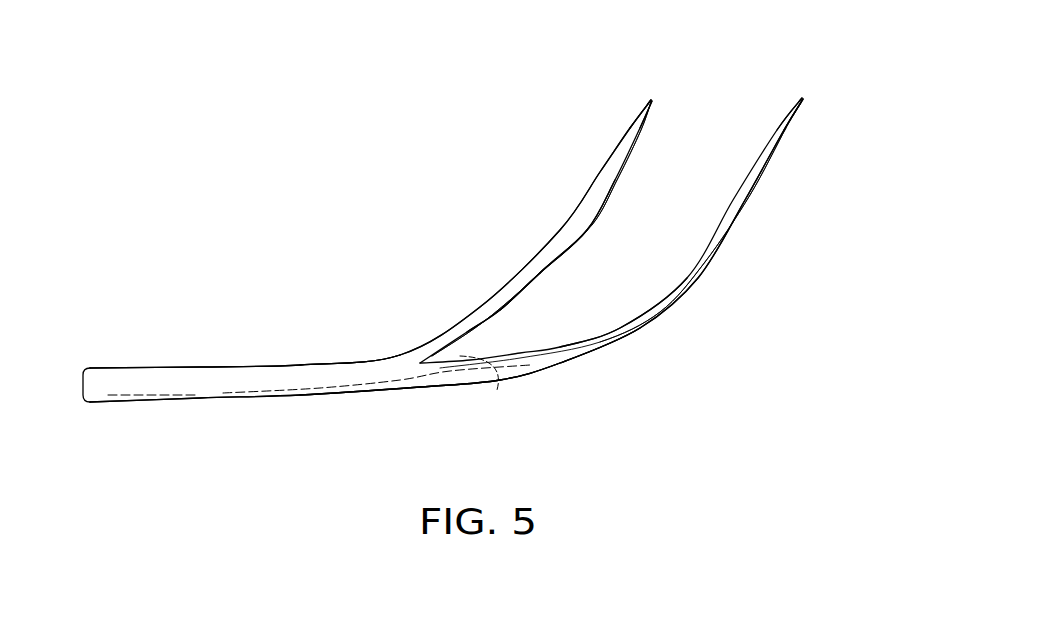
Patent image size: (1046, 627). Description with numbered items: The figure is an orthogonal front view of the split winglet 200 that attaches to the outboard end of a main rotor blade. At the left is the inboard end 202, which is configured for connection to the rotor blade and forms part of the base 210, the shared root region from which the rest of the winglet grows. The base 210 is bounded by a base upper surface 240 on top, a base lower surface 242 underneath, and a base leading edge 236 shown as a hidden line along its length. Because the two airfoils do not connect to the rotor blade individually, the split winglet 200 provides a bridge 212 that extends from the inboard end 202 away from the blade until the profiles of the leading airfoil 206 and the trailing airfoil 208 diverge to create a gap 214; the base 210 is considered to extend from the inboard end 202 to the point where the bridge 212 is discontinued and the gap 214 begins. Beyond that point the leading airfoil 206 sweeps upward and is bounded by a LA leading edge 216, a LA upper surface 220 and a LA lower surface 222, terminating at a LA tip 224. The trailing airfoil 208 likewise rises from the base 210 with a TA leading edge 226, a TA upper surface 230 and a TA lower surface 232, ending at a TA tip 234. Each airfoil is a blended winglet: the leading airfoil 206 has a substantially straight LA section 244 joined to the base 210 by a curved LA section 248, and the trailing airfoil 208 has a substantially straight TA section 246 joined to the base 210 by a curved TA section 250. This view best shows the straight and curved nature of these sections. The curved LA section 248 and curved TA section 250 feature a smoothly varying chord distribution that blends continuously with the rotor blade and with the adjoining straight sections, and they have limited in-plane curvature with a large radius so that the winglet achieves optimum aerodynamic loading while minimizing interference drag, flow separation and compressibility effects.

The split winglet 200 is at (416, 248).
The inboard end 202 is at (80, 387).
The leading airfoil 206 is at (568, 218).
The trailing airfoil 208 is at (698, 278).
The base 210 is at (165, 366).
The bridge 212 is at (386, 358).
The gap 214 is at (502, 396).
The LA leading edge 216 is at (516, 297).
The LA upper surface 220 is at (547, 263).
The LA lower surface 222 is at (579, 241).
The LA tip 224 is at (651, 100).
The TA leading edge 226 is at (592, 348).
The TA upper surface 230 is at (600, 334).
The TA lower surface 232 is at (440, 393).
The TA tip 234 is at (802, 98).
The base leading edge 236 is at (207, 396).
The base upper surface 240 is at (113, 366).
The base lower surface 242 is at (123, 406).
The straight LA section 244 is at (622, 145).
The straight TA section 246 is at (757, 193).
The curved LA section 248 is at (470, 328).
The curved TA section 250 is at (633, 338).